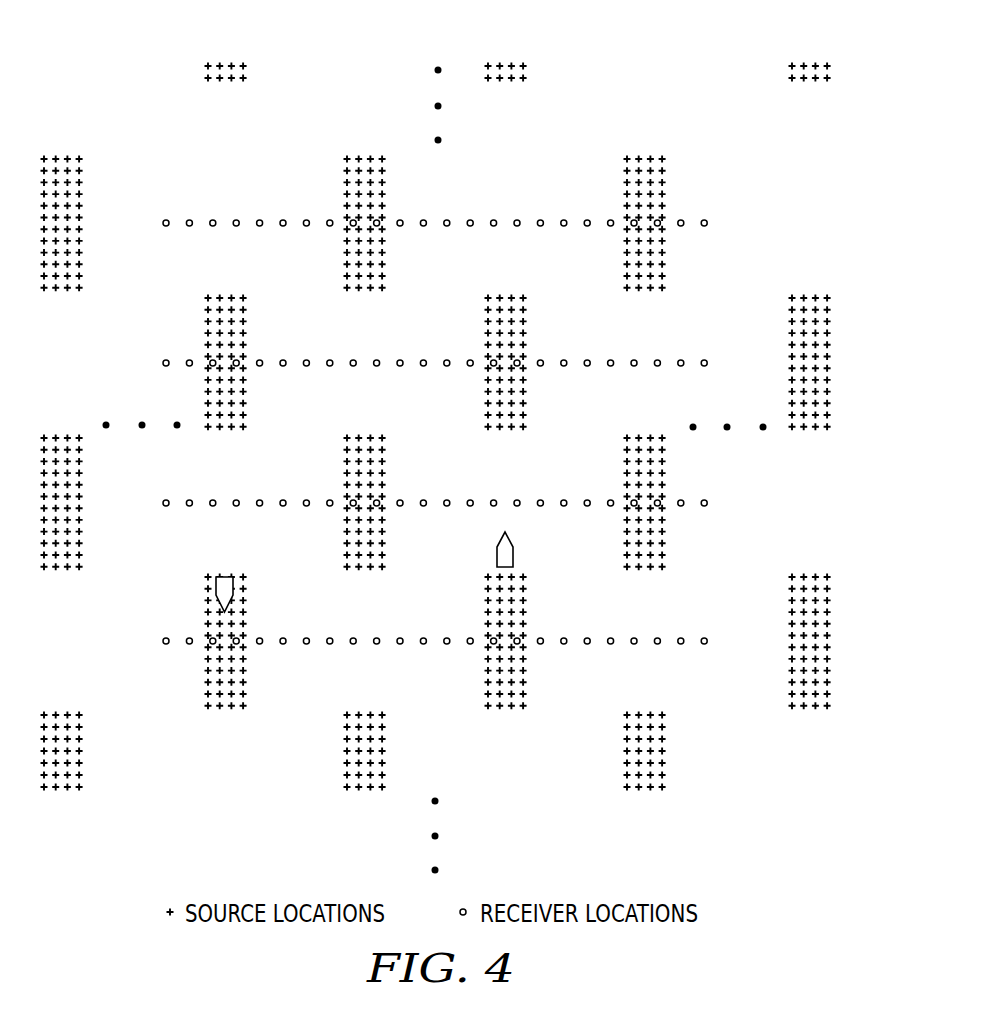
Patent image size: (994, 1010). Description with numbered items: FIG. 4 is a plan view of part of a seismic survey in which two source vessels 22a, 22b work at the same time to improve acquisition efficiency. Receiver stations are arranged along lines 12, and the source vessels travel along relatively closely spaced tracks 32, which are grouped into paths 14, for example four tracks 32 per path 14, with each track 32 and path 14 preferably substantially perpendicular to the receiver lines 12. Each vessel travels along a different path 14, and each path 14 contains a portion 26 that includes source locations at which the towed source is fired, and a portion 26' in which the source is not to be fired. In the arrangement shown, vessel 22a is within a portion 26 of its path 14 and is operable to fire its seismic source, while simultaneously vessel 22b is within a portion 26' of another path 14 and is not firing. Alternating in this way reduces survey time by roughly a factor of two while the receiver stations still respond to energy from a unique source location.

The lines of receiver stations 12 is at (467, 434).
The path 14 is at (518, 149).
The source vessel 22a is at (225, 577).
The source vessel 22b is at (514, 540).
The portion of a path 26 is at (192, 643).
The portion of a path 26' is at (402, 574).
The track 32 is at (79, 153).